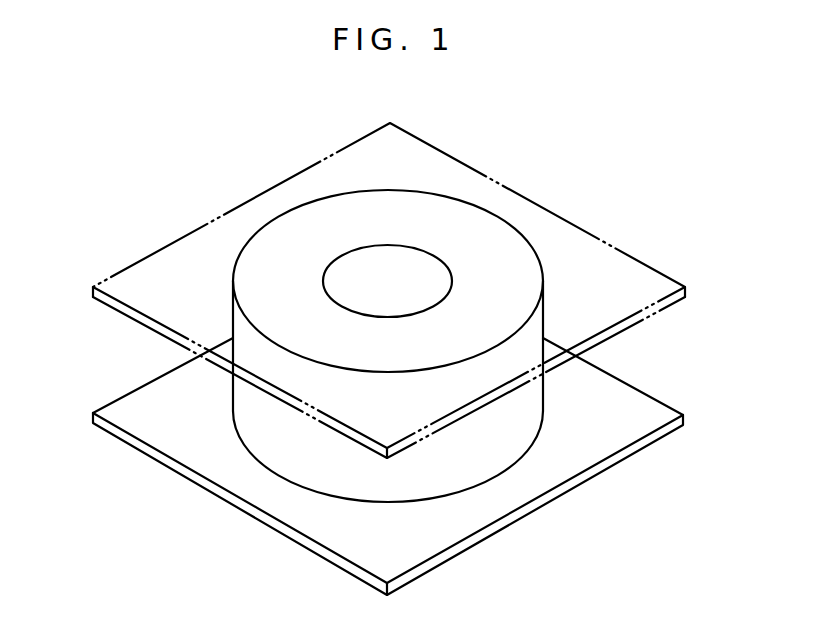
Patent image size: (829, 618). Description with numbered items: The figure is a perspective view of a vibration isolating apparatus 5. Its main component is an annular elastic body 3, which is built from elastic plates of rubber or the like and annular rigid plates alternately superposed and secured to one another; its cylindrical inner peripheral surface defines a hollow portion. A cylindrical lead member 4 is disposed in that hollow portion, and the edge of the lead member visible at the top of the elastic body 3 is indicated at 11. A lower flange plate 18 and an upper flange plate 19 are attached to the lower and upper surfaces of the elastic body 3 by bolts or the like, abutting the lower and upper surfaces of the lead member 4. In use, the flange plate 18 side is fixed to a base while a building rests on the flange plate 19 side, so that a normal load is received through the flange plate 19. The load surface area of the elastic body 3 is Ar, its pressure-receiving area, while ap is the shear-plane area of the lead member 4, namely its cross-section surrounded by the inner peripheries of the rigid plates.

The vibration isolating apparatus 5 is at (655, 237).
The flange plate 19 is at (553, 220).
The flange plate 18 is at (613, 438).
The annular elastic body 3 is at (532, 408).
The cylindrical lead member 4 is at (404, 258).
The inner hole edge 11 is at (332, 266).
The area of the load surface of the elastic body Ar is at (278, 260).
The area of the shear plane of the cylindrical lead member ap is at (441, 282).